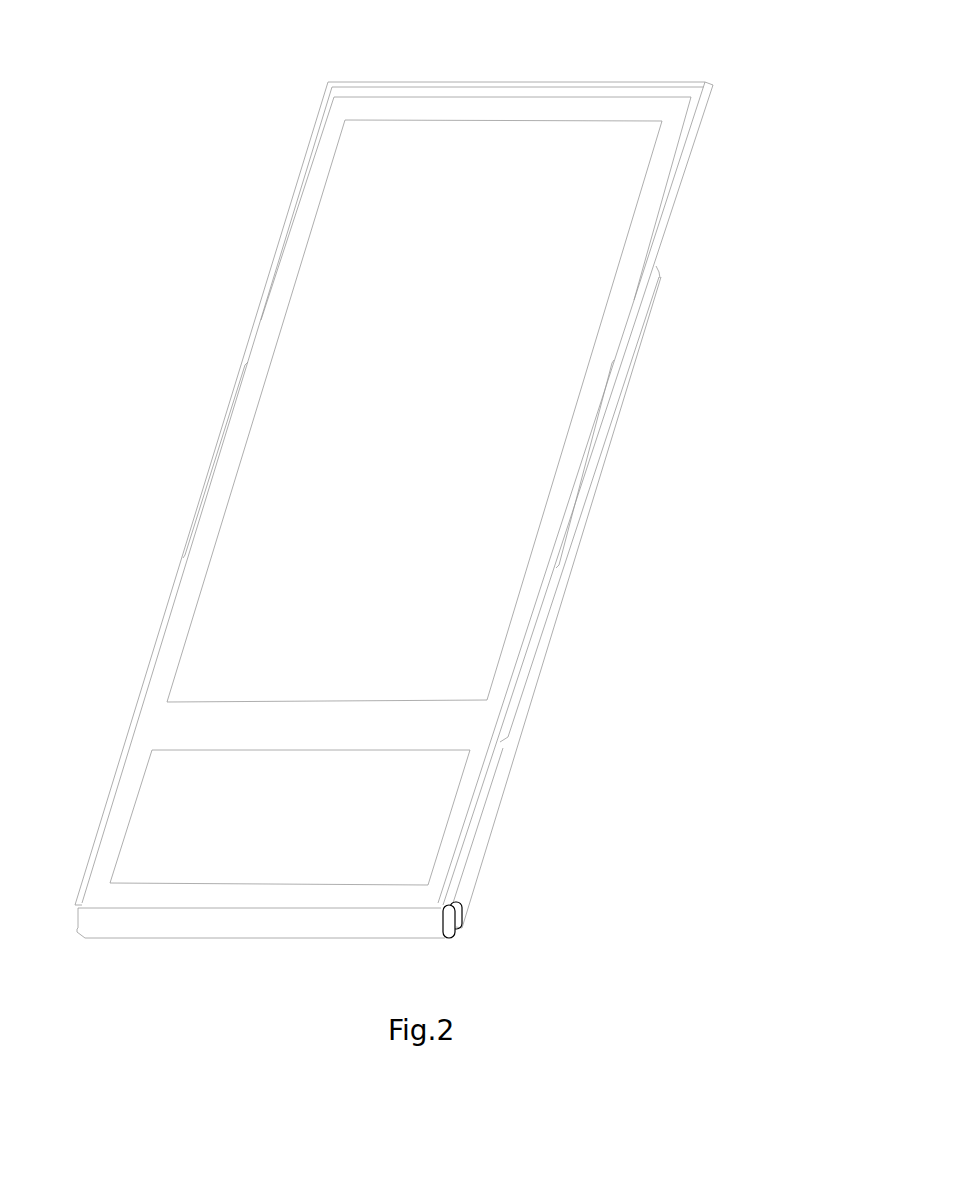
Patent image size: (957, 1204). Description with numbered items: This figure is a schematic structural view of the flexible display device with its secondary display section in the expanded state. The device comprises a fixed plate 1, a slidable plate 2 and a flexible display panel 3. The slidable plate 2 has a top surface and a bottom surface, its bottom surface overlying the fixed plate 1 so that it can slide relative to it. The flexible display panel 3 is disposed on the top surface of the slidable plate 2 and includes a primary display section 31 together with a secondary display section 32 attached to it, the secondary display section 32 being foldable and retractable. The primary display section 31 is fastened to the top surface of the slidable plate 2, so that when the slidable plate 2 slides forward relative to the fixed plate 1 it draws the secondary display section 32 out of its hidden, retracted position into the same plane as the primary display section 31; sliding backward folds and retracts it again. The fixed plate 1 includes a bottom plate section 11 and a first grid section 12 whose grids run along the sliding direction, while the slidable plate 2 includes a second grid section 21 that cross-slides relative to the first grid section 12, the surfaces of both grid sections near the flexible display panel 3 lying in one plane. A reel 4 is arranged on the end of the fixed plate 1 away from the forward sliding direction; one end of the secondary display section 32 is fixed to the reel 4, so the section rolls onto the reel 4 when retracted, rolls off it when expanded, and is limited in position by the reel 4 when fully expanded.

The fixed plate 1 is at (483, 823).
The slidable plate 2 is at (697, 125).
The flexible display panel 3 is at (442, 113).
The reel 4 is at (445, 923).
The bottom plate section 11 is at (528, 698).
The first grid section 12 is at (535, 633).
The second grid section 21 is at (592, 463).
The primary display section 31 is at (398, 227).
The secondary display section 32 is at (158, 830).